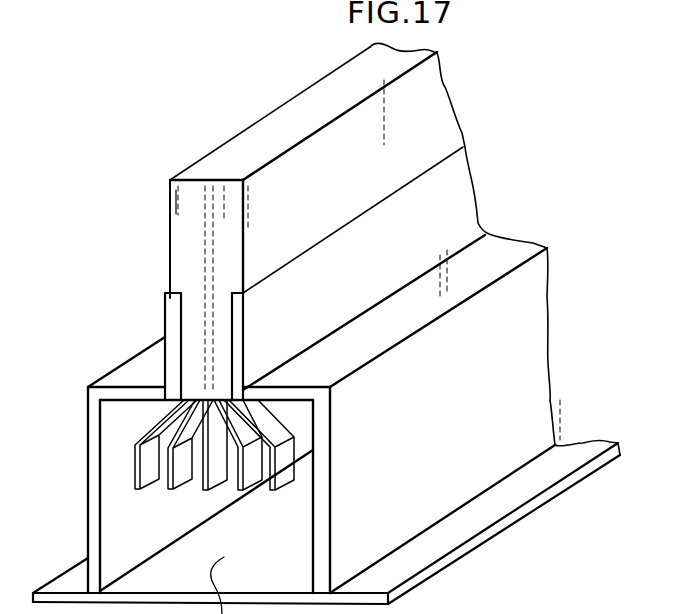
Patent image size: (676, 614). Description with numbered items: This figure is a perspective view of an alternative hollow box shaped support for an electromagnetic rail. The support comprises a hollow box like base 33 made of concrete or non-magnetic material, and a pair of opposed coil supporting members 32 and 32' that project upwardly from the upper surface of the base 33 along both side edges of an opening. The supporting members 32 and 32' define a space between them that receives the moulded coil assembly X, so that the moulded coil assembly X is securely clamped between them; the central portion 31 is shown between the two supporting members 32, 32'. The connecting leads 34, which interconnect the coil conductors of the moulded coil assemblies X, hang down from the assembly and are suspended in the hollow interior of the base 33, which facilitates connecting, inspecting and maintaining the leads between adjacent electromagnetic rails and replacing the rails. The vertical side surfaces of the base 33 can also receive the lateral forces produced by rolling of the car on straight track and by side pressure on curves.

The moulded coil assembly X is at (178, 194).
The stem 31 is at (200, 319).
The coil supporting member 32 is at (139, 346).
The coil supporting member 32' is at (358, 317).
The hollow box like base 33 is at (87, 474).
The connecting leads 34 is at (293, 476).